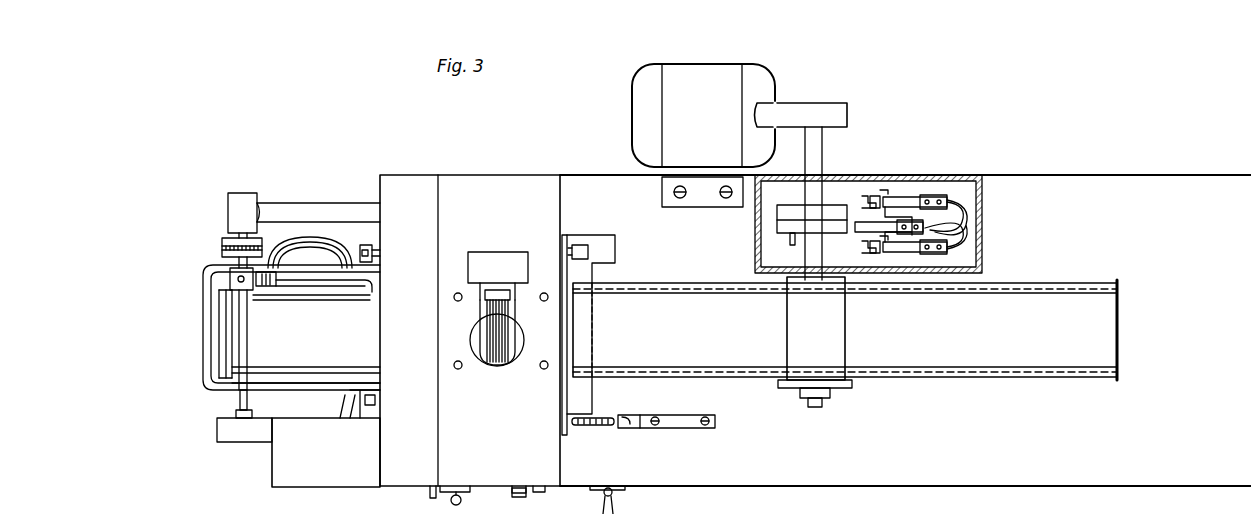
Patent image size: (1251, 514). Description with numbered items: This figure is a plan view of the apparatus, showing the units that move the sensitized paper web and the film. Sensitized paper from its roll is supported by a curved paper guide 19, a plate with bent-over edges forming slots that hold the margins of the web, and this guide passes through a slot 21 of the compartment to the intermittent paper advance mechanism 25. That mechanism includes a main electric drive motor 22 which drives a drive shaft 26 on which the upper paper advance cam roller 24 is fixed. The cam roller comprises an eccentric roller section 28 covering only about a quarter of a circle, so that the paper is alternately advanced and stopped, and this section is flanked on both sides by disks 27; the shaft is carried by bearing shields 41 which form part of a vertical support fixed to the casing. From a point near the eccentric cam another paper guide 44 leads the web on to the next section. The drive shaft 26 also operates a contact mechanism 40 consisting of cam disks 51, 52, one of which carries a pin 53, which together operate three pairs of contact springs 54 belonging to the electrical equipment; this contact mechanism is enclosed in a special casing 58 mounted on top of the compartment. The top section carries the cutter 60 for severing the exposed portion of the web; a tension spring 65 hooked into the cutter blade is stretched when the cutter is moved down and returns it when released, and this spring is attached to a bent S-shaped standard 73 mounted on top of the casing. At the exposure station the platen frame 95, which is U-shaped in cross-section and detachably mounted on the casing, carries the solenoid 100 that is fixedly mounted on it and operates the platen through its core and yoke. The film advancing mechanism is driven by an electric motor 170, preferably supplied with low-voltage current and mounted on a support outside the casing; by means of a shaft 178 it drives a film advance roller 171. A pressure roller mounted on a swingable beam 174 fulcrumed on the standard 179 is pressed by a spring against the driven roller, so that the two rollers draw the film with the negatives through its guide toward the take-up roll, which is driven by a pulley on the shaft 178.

The curved paper guide 19 is at (1012, 368).
The slot 21 is at (1108, 328).
The main electric drive motor 22 is at (750, 75).
The upper paper advance cam roller 24 is at (848, 349).
The intermittent paper advance mechanism 25 is at (752, 240).
The drive shaft 26 is at (822, 192).
The disks 27 is at (782, 388).
The eccentric roller section 28 is at (787, 332).
The contact mechanism 40 is at (775, 217).
The bearing shield 41 is at (822, 398).
The paper guide 44 is at (697, 360).
The cam disk 51 is at (789, 206).
The cam disk 52 is at (780, 236).
The pin 53 is at (796, 242).
The contact springs 54 is at (887, 200).
The casing 58 is at (982, 225).
The cutter 60 is at (580, 397).
The tension spring 65 is at (594, 426).
The S-shaped standard 73 is at (662, 428).
The platen frame 95 is at (510, 188).
The solenoid 100 is at (503, 310).
The electric motor 170 is at (331, 480).
The film advance roller 171 is at (232, 336).
The swingable beam 174 is at (203, 296).
The shaft 178 is at (240, 400).
The standard 179 is at (300, 210).